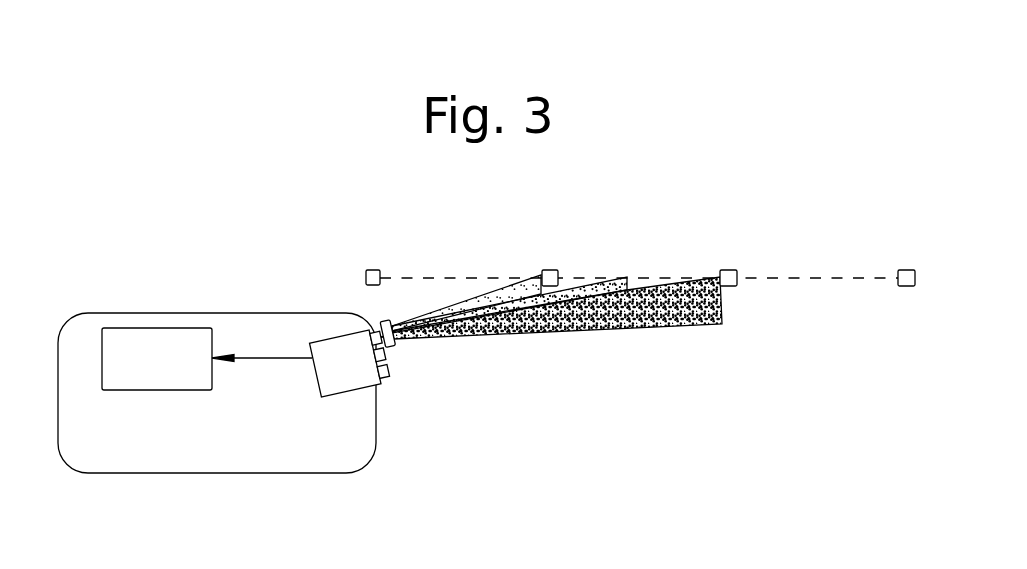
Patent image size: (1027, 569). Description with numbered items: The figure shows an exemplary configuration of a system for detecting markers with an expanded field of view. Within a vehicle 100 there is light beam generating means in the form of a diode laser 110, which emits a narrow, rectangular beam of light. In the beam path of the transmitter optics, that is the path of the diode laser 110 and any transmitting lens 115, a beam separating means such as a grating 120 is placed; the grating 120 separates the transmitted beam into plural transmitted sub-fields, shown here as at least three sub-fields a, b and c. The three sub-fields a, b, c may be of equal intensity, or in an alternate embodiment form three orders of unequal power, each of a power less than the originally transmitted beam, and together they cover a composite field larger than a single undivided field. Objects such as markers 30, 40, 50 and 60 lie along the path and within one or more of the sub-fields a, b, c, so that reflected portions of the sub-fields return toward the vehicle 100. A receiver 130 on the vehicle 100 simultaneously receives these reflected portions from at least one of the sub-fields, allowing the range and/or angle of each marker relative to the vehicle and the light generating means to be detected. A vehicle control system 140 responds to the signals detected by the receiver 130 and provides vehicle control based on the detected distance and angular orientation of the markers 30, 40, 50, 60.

The marker 30 is at (374, 270).
The marker 40 is at (551, 270).
The marker 50 is at (729, 270).
The marker 60 is at (905, 270).
The vehicle 100 is at (95, 473).
The diode laser 110 is at (333, 400).
The transmitting lens 115 is at (376, 330).
The grating 120 is at (414, 353).
The receiver 130 is at (386, 352).
The vehicle control system 140 is at (157, 390).
The sub-field a is at (535, 273).
The sub-field b is at (627, 277).
The sub-field c is at (722, 326).